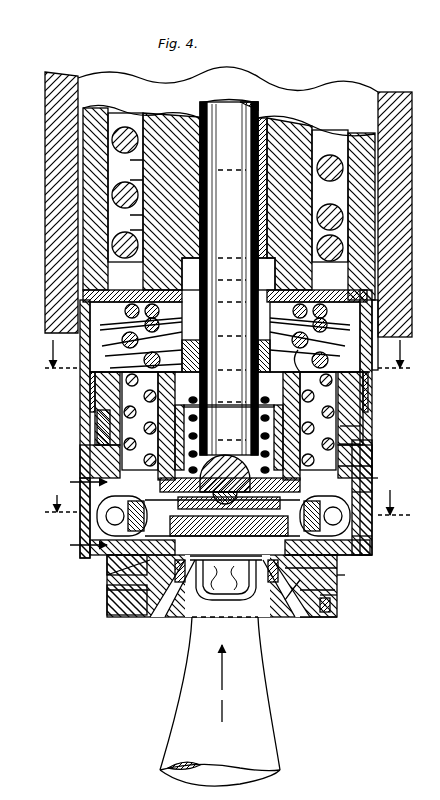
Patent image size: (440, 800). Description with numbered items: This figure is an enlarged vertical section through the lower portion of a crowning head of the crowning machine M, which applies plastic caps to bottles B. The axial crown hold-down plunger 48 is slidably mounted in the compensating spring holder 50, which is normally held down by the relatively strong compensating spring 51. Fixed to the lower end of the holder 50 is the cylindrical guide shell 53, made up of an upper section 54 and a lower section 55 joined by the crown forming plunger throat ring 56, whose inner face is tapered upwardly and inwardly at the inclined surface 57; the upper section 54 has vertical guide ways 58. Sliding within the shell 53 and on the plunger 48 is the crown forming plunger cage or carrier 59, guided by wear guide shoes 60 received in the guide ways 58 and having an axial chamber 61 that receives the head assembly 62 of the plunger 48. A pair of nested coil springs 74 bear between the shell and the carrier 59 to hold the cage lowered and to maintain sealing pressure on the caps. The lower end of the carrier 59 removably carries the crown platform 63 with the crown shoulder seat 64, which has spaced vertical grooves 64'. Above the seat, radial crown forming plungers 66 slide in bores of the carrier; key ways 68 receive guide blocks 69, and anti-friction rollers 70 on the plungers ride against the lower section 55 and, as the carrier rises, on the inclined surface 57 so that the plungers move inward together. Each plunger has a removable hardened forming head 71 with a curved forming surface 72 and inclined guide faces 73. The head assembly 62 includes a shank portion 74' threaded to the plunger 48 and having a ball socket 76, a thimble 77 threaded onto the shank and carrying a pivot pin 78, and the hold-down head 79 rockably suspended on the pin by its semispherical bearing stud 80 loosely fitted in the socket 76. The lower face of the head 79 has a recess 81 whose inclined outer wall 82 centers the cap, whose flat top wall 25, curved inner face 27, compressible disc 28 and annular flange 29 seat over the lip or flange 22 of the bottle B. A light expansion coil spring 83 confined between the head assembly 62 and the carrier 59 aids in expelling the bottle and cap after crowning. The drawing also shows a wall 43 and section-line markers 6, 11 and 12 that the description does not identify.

The crowning machine M is at (358, 100).
The outer wall 43 is at (405, 92).
The crown hold-down plunger 48 is at (252, 112).
The compensating spring holder 50 is at (287, 140).
The compensating spring 51 is at (333, 155).
The nested coil springs 74 is at (145, 337).
The vertical guide ways 58 is at (90, 366).
The upper section of guide shell 54 is at (356, 336).
The expansion coil spring 83 is at (292, 374).
The guide shell 53 is at (376, 366).
The section line 11 is at (62, 391).
The wear guide shoes 60 is at (88, 397).
The thimble 77 is at (122, 440).
The crown forming plunger throat ring 56 is at (100, 420).
The pivot pin 78 is at (110, 457).
The section line 12 is at (79, 514).
The crown forming plungers 66 is at (135, 500).
The section line 6 is at (59, 533).
The curved forming surface 72 is at (380, 494).
The anti-friction rollers 70 is at (100, 534).
The forming heads 71 is at (115, 564).
The hold-down head 79 is at (120, 575).
The recess 81 is at (108, 585).
The crown shoulder seat 64 is at (222, 599).
The shank portion 74' is at (229, 435).
The ball socket 76 is at (240, 446).
The semispherical bearing stud 80 is at (232, 474).
The curved inner face 27 is at (221, 600).
The lip or flange 22 is at (226, 585).
The top wall 25 is at (226, 578).
The outer wall of recess 82 is at (225, 611).
The compressible disc 28 is at (286, 595).
The annular flange 29 is at (344, 598).
The vertical grooves 64' is at (344, 604).
The crown platform 63 is at (318, 618).
The inclined guide faces 73 is at (337, 570).
The guide blocks 69 is at (345, 575).
The key ways 68 is at (345, 558).
The lower section of guide shell 55 is at (372, 534).
The tapered inner face 57 is at (372, 494).
The head assembly 62 is at (372, 466).
The axial chamber 61 is at (362, 446).
The crown forming plunger cage 59 is at (362, 428).
The bottles B is at (256, 728).